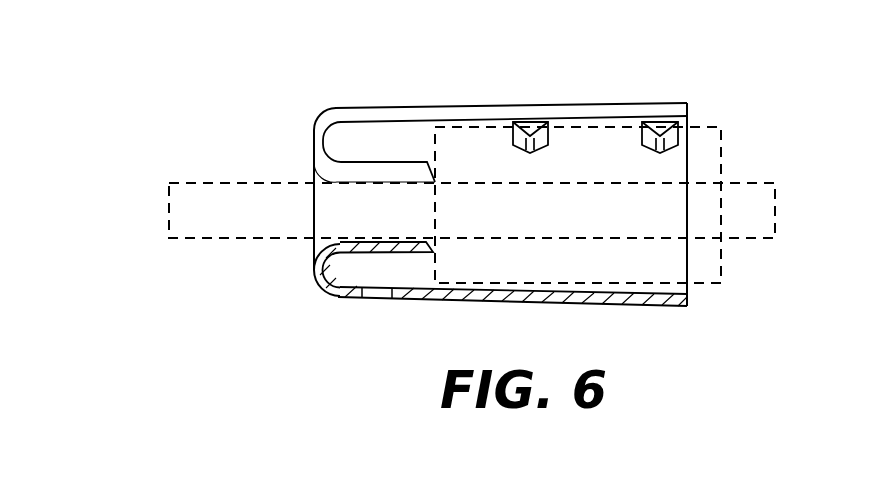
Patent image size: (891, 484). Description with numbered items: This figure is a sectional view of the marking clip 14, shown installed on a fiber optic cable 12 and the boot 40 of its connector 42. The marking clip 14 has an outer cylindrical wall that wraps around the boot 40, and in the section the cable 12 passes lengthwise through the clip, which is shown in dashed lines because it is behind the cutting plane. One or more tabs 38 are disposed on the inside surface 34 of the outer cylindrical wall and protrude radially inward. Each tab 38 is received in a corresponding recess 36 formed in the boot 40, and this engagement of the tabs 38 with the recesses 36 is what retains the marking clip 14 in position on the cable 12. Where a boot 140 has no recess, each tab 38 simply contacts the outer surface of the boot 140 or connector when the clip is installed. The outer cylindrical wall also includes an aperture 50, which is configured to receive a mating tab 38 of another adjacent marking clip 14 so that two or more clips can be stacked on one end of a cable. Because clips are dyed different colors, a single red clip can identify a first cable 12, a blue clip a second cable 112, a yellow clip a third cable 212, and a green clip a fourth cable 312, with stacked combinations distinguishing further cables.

The marking clip 14 is at (416, 109).
The inside surface 34 is at (368, 145).
The tab 38 is at (532, 127).
The recess 36 is at (542, 140).
The aperture 50 is at (377, 296).
The boot 40 is at (614, 164).
The boot 140 is at (718, 122).
The connector 42 is at (739, 146).
The fiber optic cable 12 is at (520, 181).
The second cable 112 is at (472, 210).
The third cable 212 is at (472, 210).
The fourth cable 312 is at (757, 200).